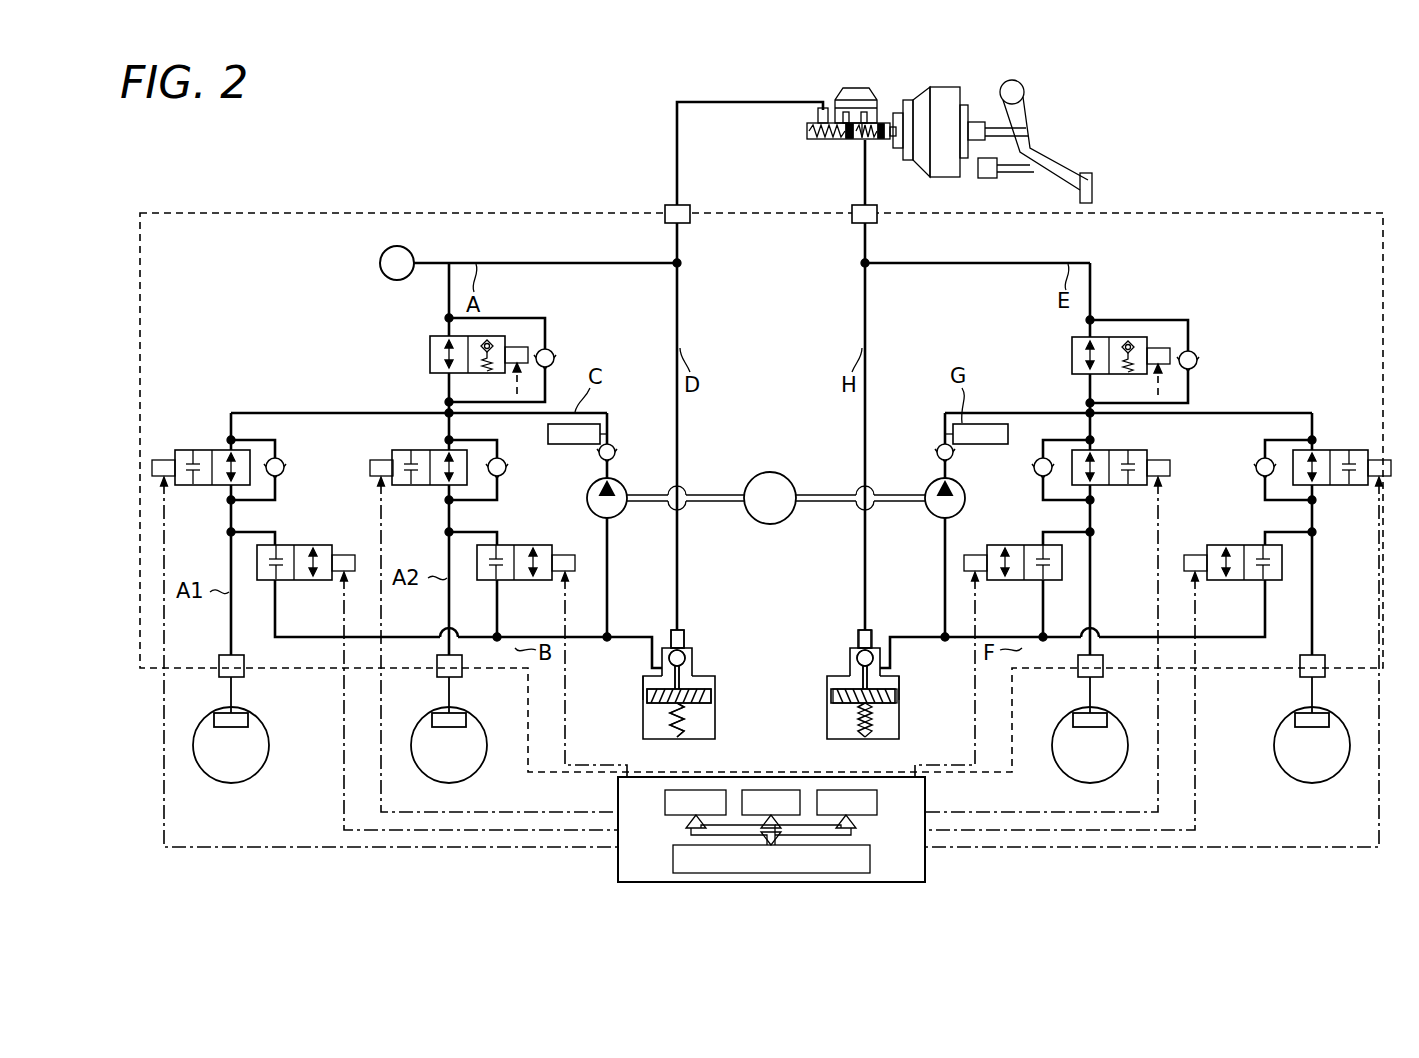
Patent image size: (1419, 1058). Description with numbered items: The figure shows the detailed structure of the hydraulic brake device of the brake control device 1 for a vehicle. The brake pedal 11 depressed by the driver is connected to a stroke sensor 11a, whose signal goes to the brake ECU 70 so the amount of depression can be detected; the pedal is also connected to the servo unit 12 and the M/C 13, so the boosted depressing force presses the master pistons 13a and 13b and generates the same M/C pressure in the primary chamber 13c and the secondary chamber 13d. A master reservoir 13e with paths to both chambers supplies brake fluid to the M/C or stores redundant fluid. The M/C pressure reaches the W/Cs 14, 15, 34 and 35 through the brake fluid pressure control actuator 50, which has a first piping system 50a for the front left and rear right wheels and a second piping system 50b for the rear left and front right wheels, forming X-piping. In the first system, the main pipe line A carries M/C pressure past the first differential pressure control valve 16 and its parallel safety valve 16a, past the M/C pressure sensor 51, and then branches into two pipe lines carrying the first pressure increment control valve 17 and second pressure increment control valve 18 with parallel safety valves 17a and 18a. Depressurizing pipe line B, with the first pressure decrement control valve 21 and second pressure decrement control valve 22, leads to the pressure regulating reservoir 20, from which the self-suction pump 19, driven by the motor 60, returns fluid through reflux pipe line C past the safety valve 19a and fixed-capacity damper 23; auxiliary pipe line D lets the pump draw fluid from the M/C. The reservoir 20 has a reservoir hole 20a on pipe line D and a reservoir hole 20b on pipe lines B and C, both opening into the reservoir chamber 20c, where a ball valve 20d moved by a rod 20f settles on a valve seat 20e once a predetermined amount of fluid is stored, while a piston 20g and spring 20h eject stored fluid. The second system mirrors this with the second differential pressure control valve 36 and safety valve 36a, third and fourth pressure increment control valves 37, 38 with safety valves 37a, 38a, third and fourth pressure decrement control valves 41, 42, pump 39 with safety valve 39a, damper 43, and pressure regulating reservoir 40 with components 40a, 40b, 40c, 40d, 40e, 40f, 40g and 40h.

The brake control device for a vehicle 1 is at (1178, 75).
The brake pedal 11 is at (1035, 110).
The stroke sensor 11a is at (988, 178).
The servo unit 12 is at (944, 87).
The M/C 13 is at (795, 128).
The master piston 13a is at (850, 140).
The master piston 13b is at (880, 140).
The primary chamber 13c is at (822, 125).
The secondary chamber 13d is at (868, 140).
The master reservoir 13e is at (852, 88).
The W/C 14 is at (214, 720).
The W/C 15 is at (432, 720).
The first differential pressure control valve 16 is at (430, 355).
The safety valve 16a is at (542, 346).
The first pressure increment control valve 17 is at (222, 440).
The safety valve 17a is at (284, 460).
The second pressure increment control valve 18 is at (428, 446).
The safety valve 18a is at (507, 467).
The self-suction pump 19 is at (588, 498).
The safety valve 19a is at (612, 444).
The pressure regulating reservoir 20 is at (640, 730).
The reservoir hole 20a is at (680, 630).
The reservoir hole 20b is at (648, 668).
The reservoir chamber 20c is at (643, 680).
The ball valve 20d is at (688, 652).
The valve seat 20e is at (694, 662).
The rod 20f is at (690, 680).
The piston 20g is at (711, 696).
The spring 20h is at (685, 738).
The first pressure decrement control valve 21 is at (288, 545).
The second pressure decrement control valve 22 is at (516, 545).
The fixed-capacity damper 23 is at (600, 424).
The W/C 34 is at (1330, 720).
The W/C 35 is at (1107, 720).
The second differential pressure control valve 36 is at (1072, 354).
The safety valve 36a is at (1183, 347).
The third pressure increment control valve 37 is at (1322, 450).
The safety valve 37a is at (1256, 460).
The fourth pressure increment control valve 38 is at (1108, 450).
The safety valve 38a is at (1033, 465).
The pump 39 is at (966, 498).
The safety valve 39a is at (935, 450).
The pressure regulating reservoir 40 is at (902, 730).
The reservoir hole 40a is at (862, 630).
The reservoir hole 40b is at (894, 668).
The reservoir chamber 40c is at (899, 680).
The ball valve 40d is at (854, 652).
The valve seat 40e is at (848, 662).
The rod 40f is at (852, 680).
The piston 40g is at (833, 696).
The spring 40h is at (860, 738).
The third pressure decrement control valve 41 is at (1258, 545).
The fourth pressure decrement control valve 42 is at (1032, 545).
The damper 43 is at (955, 424).
The brake fluid pressure control actuator 50 is at (490, 213).
The first piping system 50a is at (258, 350).
The second piping system 50b is at (1253, 335).
The M/C pressure sensor 51 is at (379, 263).
The motor 60 is at (760, 473).
The brake ECU 70 is at (925, 878).